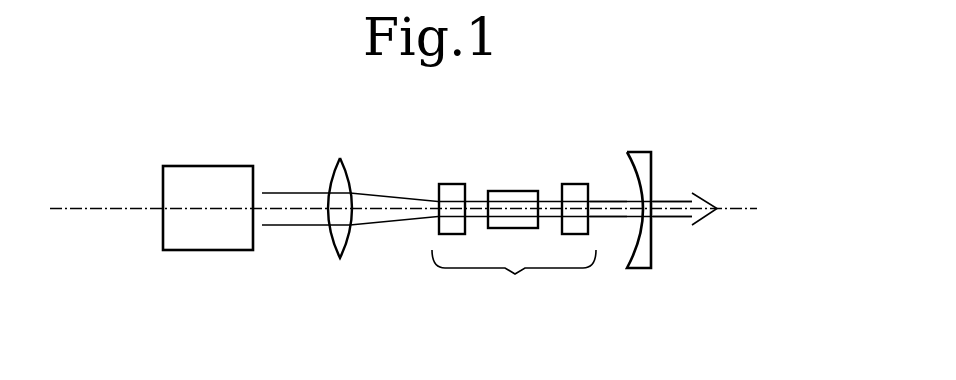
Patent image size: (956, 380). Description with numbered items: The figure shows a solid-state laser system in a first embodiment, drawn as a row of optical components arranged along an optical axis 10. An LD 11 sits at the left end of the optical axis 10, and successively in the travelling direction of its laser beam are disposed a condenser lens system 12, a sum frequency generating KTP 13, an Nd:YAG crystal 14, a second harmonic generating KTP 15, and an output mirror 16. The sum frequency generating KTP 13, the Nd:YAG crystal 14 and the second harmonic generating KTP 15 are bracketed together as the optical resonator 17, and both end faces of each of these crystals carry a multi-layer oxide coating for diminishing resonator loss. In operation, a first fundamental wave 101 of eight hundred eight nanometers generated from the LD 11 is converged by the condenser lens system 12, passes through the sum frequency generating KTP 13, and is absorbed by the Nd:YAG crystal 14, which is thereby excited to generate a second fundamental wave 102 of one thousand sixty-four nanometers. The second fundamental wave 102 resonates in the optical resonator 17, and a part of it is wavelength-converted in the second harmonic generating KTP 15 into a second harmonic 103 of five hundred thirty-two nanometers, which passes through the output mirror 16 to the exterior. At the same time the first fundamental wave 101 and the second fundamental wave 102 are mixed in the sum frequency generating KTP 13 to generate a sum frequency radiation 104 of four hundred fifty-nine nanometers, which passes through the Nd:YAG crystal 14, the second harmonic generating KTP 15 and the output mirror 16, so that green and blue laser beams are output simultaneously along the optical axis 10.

The optical axis 10 is at (110, 208).
The LD 11 is at (213, 182).
The condenser lens system 12 is at (343, 178).
The sum frequency generating KTP 13 is at (447, 223).
The Nd:YAG crystal 14 is at (510, 190).
The second harmonic generating KTP 15 is at (573, 190).
The output mirror 16 is at (636, 268).
The optical resonator 17 is at (514, 278).
The first fundamental wave 101 is at (298, 215).
The second fundamental wave 102 is at (605, 200).
The second harmonic 103 is at (680, 215).
The sum frequency radiation 104 is at (672, 209).